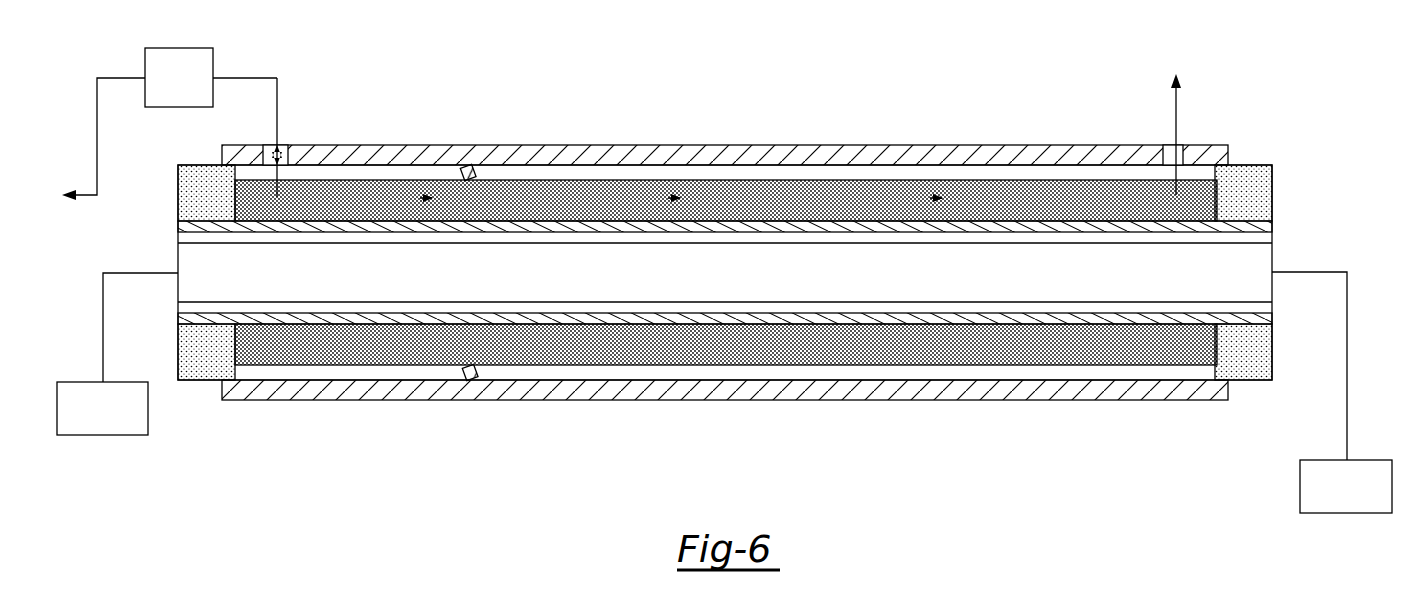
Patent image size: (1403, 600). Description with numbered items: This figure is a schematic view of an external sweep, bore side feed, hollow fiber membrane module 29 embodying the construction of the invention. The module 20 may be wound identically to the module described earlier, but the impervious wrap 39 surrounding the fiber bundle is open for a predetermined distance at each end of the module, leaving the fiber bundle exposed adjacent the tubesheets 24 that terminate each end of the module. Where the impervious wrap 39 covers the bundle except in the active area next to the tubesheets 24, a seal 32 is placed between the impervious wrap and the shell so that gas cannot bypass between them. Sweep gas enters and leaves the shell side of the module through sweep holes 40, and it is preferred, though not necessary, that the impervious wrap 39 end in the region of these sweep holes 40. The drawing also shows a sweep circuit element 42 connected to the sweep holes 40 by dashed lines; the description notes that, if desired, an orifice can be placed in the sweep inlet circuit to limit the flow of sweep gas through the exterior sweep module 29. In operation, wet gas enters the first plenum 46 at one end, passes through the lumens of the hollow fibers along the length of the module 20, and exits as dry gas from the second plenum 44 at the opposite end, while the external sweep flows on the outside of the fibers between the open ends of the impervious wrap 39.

The module 20 is at (863, 366).
The tubesheet 24 is at (207, 183).
The external sweep, bore side feed module 29 is at (966, 78).
The seal 32 is at (460, 168).
The impervious wrap 39 is at (626, 178).
The sweep holes 40 is at (275, 150).
The controller / control unit 42 is at (192, 91).
The second plenum 44 is at (103, 435).
The first plenum 46 is at (1352, 513).